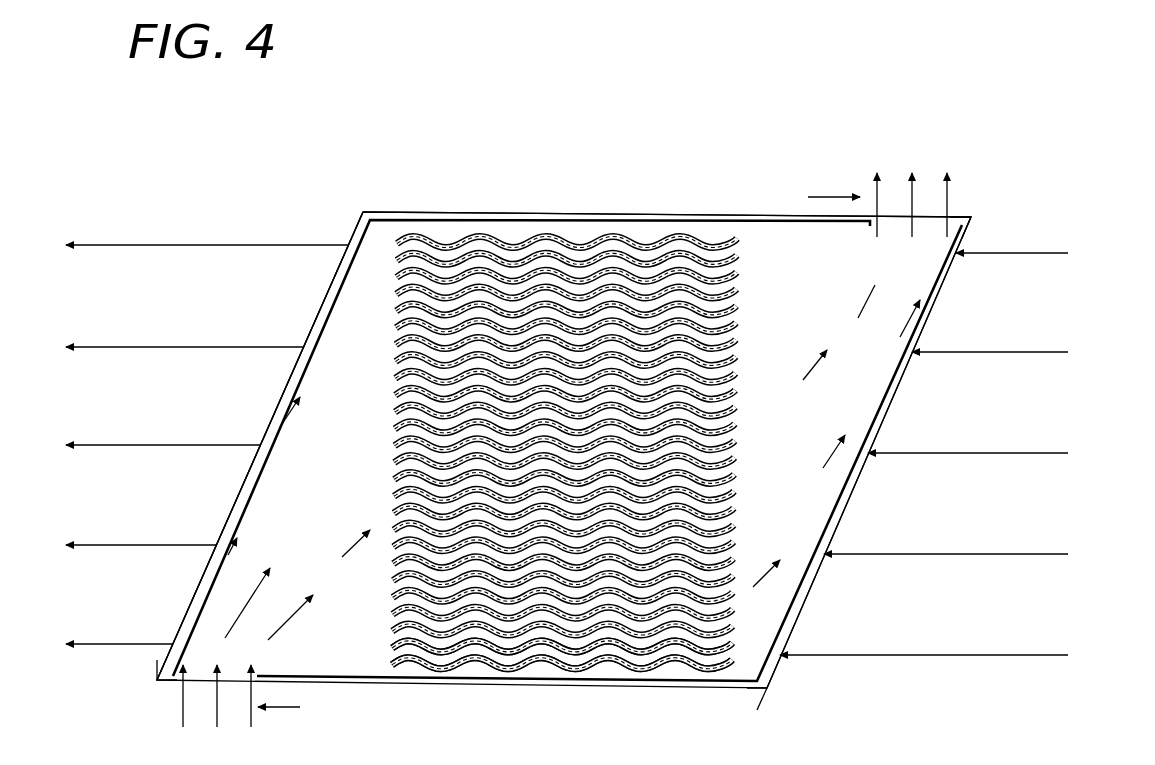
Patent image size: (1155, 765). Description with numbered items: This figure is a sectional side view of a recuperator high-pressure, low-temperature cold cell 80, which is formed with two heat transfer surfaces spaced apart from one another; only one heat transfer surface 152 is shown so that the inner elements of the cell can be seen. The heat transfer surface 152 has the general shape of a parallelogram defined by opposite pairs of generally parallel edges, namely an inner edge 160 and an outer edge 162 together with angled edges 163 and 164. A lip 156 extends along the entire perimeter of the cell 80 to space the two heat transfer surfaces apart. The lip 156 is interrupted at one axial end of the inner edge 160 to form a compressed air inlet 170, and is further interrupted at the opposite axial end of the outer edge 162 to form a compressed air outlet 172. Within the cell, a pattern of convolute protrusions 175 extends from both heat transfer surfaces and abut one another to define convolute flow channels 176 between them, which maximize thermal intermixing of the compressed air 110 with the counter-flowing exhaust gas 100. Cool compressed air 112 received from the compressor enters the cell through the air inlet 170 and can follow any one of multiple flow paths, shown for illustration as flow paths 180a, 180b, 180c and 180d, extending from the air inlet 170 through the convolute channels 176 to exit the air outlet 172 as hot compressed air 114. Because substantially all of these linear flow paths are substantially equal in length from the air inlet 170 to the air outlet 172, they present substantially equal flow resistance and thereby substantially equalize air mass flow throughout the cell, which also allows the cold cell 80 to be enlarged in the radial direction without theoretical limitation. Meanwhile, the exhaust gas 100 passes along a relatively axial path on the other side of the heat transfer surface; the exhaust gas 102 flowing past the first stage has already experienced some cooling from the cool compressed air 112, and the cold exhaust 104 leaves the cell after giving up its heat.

The cold cell 80 is at (730, 114).
The exhaust gas 100 is at (122, 247).
The exhaust gas 102 is at (1009, 414).
The cold exhaust 104 is at (157, 405).
The compressed air 110 is at (559, 453).
The cool compressed air 112 is at (236, 711).
The hot compressed air 114 is at (925, 189).
The heat transfer surface 152 is at (518, 235).
The lip 156 is at (392, 218).
The inner edge 160 is at (704, 690).
The outer edge 162 is at (625, 213).
The angled edge 163 is at (810, 582).
The angled edge 164 is at (233, 513).
The compressed air inlet 170 is at (200, 688).
The compressed air outlet 172 is at (928, 218).
The convolute protrusions 175 is at (577, 675).
The convolute flow channels 176 is at (540, 640).
The flow path 180a is at (395, 240).
The flow path 180b is at (392, 298).
The flow path 180c is at (390, 448).
The flow path 180d is at (360, 642).